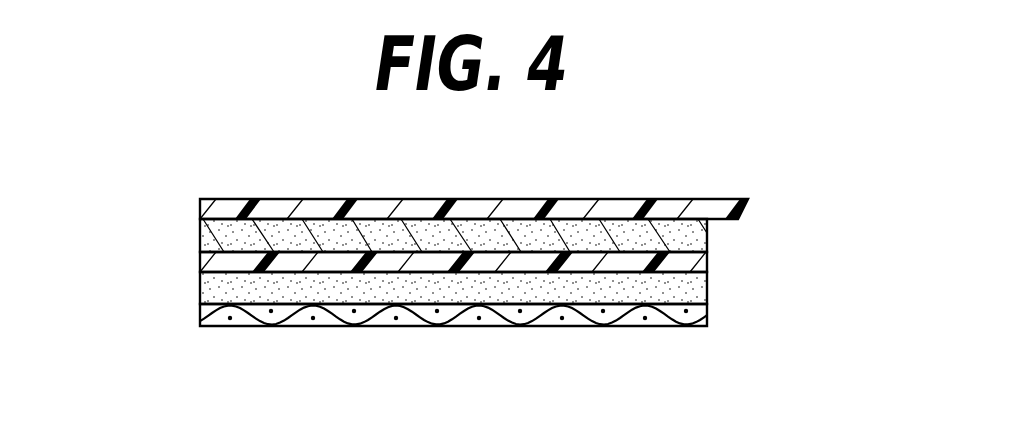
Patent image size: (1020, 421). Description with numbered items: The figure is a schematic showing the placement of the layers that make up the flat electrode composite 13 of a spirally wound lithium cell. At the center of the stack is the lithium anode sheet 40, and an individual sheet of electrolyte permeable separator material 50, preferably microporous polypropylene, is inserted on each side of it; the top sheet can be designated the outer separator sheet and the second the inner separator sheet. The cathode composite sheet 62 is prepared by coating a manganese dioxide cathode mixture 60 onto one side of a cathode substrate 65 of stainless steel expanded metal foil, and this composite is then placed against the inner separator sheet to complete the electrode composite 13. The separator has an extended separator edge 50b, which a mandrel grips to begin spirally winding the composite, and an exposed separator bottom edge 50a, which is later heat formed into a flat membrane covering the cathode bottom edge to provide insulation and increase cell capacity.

The electrode composite 13 is at (221, 161).
The lithium anode sheet 40 is at (693, 236).
The separator sheet 50 is at (675, 208).
The separator bottom edge 50a is at (197, 262).
The extended separator edge 50b is at (750, 208).
The cathode coating 60 is at (697, 287).
The cathode composite sheet 62 is at (192, 272).
The cathode substrate 65 is at (632, 318).